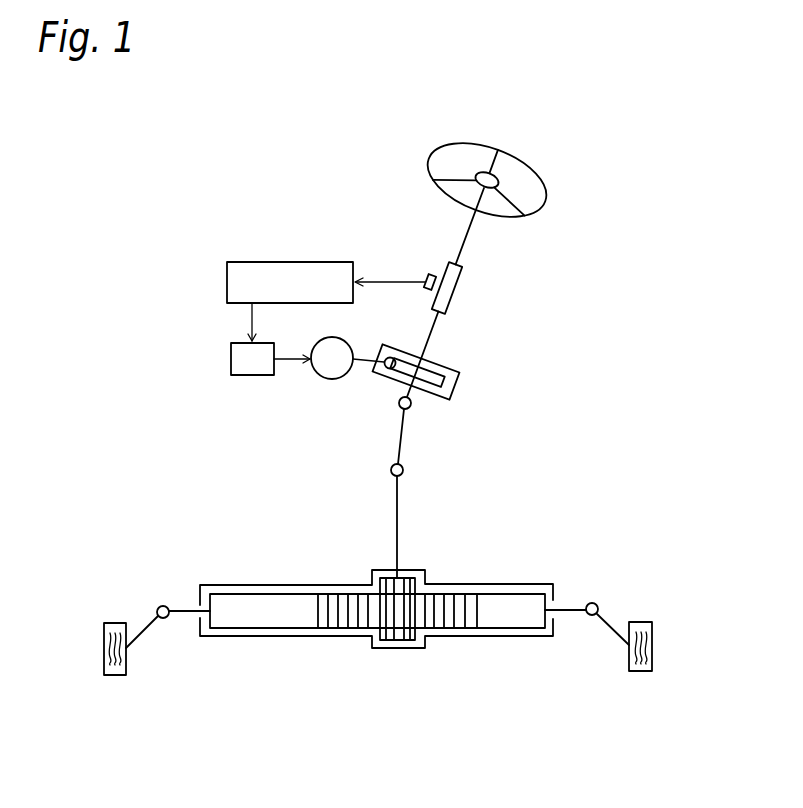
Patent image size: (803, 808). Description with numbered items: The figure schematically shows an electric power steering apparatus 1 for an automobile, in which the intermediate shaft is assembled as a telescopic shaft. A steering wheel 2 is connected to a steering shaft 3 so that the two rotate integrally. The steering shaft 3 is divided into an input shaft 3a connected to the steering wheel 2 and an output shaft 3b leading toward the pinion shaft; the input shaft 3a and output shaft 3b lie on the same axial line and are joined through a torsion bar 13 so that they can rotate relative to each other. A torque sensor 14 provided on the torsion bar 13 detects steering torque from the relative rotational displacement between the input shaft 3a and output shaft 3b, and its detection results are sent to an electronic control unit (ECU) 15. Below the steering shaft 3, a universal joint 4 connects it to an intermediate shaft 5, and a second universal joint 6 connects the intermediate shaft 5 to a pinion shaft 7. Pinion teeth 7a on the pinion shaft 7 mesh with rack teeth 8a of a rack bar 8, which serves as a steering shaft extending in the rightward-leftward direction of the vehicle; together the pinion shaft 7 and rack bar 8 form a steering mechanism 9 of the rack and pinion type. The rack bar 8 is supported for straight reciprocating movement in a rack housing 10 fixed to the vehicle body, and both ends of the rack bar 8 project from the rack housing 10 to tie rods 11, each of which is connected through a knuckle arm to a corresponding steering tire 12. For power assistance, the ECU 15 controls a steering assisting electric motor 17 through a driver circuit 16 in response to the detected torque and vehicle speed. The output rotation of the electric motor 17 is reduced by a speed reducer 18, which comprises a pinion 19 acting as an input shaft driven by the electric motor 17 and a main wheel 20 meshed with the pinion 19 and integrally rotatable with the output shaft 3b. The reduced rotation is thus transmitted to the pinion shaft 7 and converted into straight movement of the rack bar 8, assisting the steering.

The electric power steering apparatus 1 is at (564, 142).
The steering wheel 2 is at (478, 146).
The steering shaft 3 is at (473, 292).
The input shaft 3a is at (464, 250).
The output shaft 3b is at (432, 334).
The universal joint 4 is at (411, 404).
The intermediate shaft 5 is at (402, 437).
The universal joint 6 is at (404, 470).
The pinion shaft 7 is at (400, 543).
The pinion teeth 7a is at (405, 641).
The rack bar 8 is at (377, 640).
The rack teeth 8a is at (357, 621).
The steering mechanism 9 is at (376, 629).
The rack housing 10 is at (307, 584).
The tie rod 11 is at (148, 626).
The steering tire 12 is at (116, 676).
The torsion bar 13 is at (457, 290).
The torque sensor 14 is at (428, 273).
The electronic control unit (ECU) 15 is at (248, 261).
The driver circuit 16 is at (231, 352).
The steering assisting electric motor 17 is at (332, 380).
The speed reducer 18 is at (461, 372).
The pinion 19 is at (389, 370).
The main wheel 20 is at (442, 381).